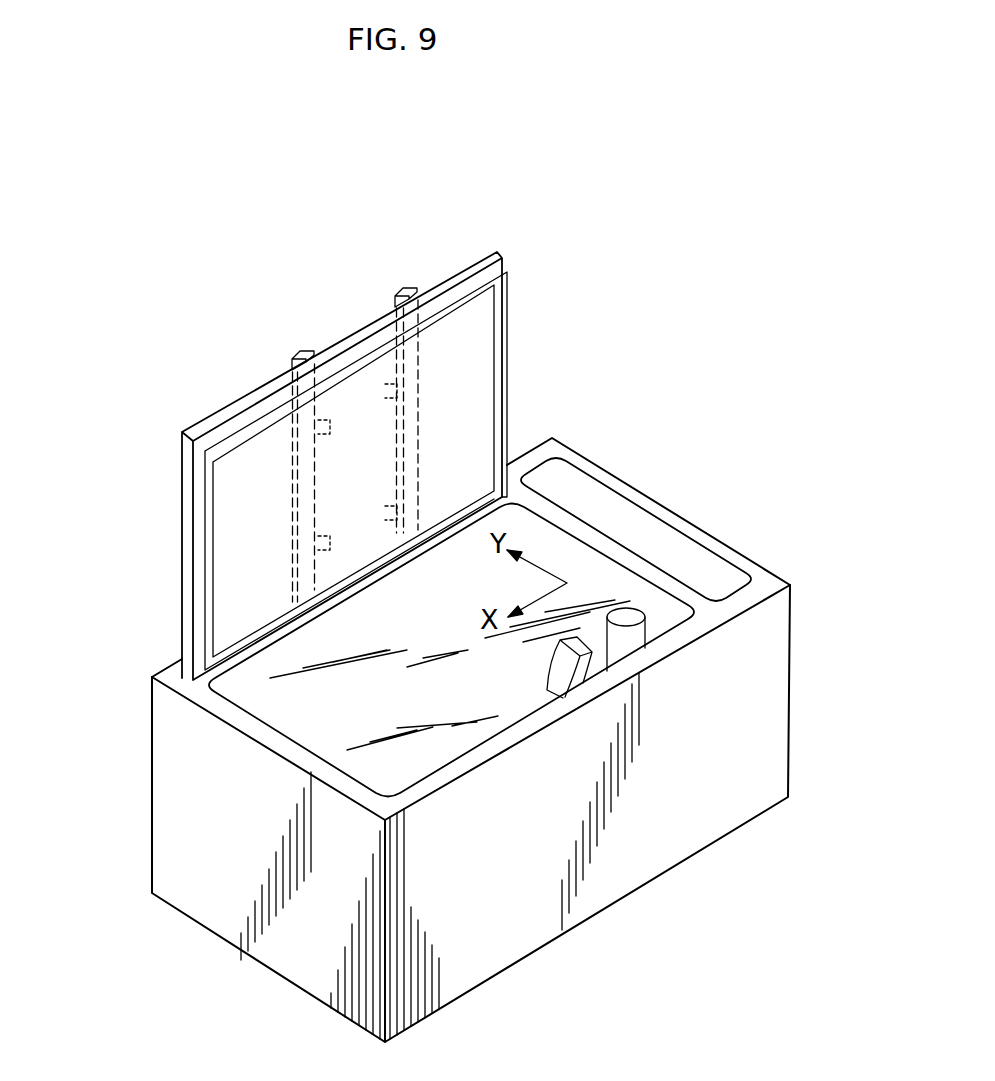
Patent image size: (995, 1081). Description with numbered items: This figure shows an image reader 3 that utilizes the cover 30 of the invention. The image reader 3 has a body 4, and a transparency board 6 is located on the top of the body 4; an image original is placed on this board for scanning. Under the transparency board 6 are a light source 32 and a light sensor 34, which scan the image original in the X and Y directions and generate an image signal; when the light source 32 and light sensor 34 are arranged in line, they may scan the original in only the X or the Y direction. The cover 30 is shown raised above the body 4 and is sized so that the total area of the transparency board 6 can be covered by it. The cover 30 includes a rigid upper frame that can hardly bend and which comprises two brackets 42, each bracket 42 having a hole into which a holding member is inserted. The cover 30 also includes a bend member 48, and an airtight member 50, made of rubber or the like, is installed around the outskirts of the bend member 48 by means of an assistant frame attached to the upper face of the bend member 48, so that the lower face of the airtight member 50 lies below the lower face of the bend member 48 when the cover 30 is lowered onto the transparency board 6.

The image reader 3 is at (740, 488).
The body 4 is at (162, 770).
The transparency board 6 is at (538, 530).
The cover 30 is at (468, 258).
The light source 32 is at (571, 646).
The light sensor 34 is at (627, 618).
The bracket 42 is at (327, 424).
The bend member 48 is at (483, 404).
The airtight member 50 is at (509, 331).